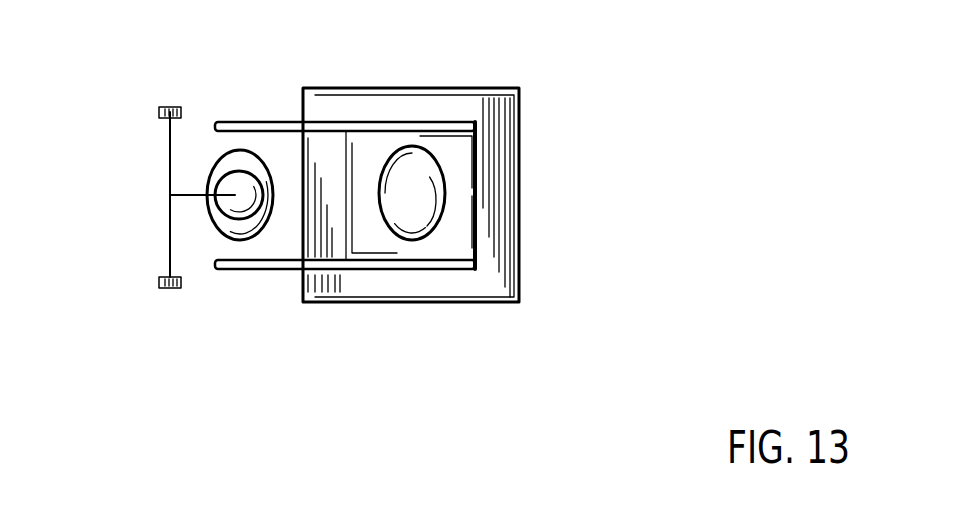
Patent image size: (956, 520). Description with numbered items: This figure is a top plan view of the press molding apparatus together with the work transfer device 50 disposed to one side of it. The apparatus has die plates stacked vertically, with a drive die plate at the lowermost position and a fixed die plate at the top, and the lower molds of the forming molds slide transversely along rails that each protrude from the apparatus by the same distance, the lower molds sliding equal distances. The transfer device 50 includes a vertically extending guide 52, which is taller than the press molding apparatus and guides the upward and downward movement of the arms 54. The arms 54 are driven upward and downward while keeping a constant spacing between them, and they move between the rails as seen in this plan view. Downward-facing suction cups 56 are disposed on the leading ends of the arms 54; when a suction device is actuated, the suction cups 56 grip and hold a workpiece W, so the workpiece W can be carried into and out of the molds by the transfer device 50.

The workpiece (wafer) W is at (447, 210).
The suction cups 56 is at (230, 172).
The arms 54 is at (188, 198).
The guide 52 is at (165, 290).
The work transfer device 50 is at (138, 243).